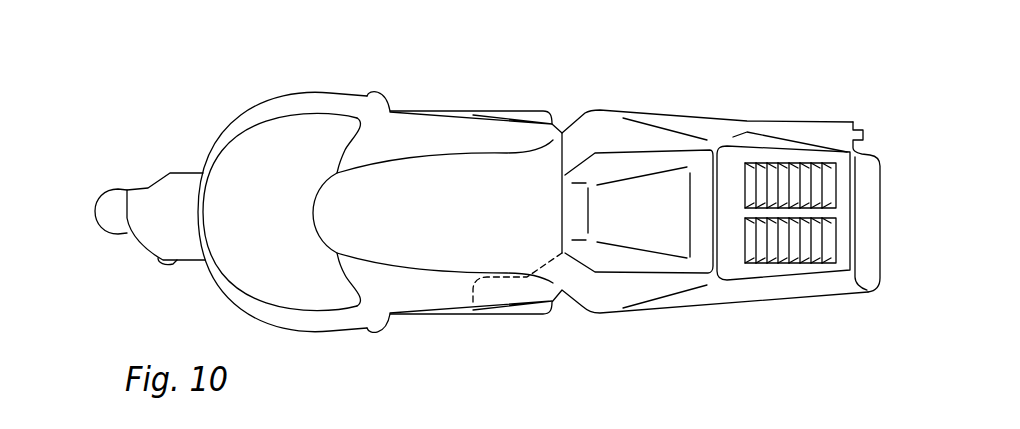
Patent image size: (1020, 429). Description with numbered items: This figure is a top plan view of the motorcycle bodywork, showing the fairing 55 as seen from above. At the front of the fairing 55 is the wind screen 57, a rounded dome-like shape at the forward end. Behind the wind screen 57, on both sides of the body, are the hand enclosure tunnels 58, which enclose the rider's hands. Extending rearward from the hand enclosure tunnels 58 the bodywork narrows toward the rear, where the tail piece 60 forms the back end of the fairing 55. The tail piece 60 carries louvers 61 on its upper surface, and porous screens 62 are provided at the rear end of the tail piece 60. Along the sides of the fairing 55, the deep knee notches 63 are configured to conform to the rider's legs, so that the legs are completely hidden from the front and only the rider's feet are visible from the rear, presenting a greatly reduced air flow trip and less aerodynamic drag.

The fairing 55 is at (220, 290).
The wind screen 57 is at (283, 152).
The hand enclosure tunnels 58 is at (352, 95).
The tail piece 60 is at (733, 265).
The louvers 61 is at (808, 175).
The porous screens 62 is at (868, 260).
The knee notches 63 is at (532, 307).